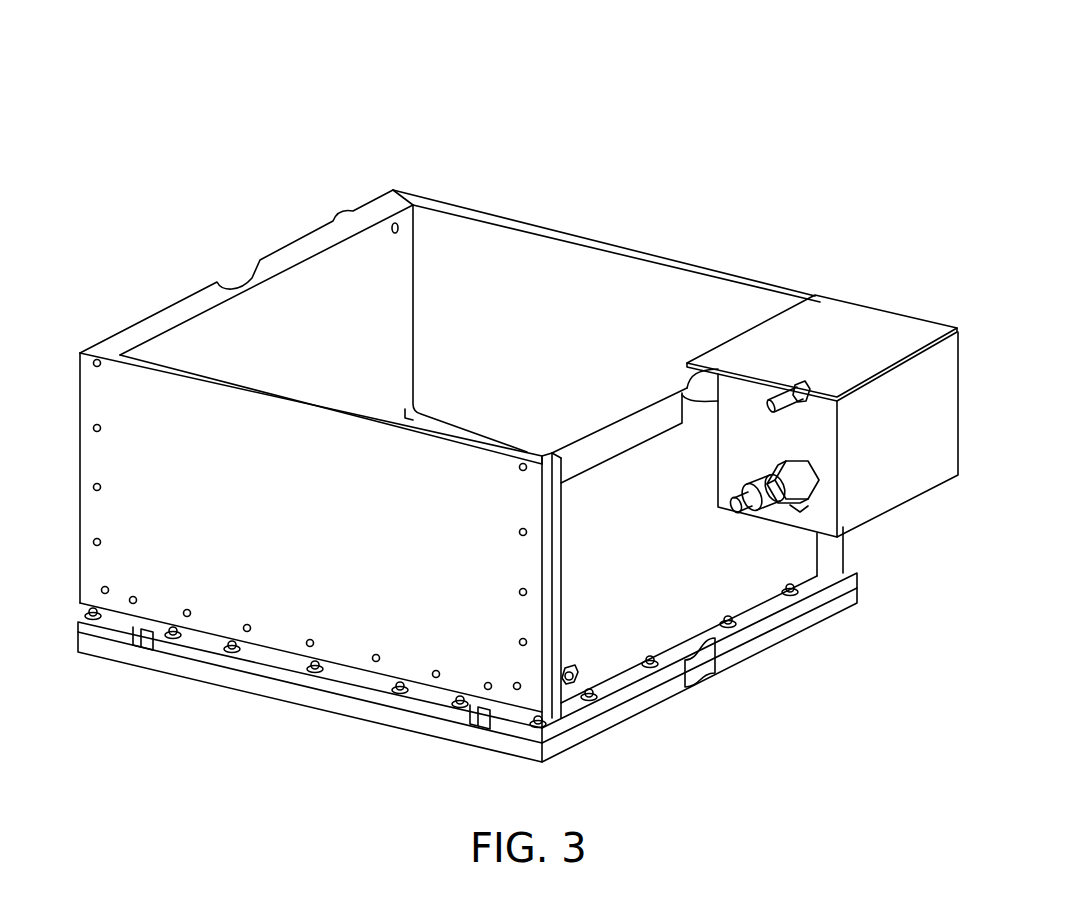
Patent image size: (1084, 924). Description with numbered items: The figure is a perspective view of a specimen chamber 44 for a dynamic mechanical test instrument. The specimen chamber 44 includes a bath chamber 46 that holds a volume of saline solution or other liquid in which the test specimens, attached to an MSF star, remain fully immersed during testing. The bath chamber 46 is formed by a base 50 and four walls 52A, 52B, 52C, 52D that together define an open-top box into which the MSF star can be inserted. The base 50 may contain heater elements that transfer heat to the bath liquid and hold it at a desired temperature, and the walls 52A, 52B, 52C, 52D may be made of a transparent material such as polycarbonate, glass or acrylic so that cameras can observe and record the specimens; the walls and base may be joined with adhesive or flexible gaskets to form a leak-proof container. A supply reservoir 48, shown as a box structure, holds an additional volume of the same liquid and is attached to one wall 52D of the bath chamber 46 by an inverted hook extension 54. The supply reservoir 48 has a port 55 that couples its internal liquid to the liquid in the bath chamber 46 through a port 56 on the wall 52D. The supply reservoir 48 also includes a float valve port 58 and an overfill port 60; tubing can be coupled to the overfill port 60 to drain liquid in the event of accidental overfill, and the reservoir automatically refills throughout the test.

The specimen chamber 44 is at (500, 403).
The bath chamber 46 is at (450, 435).
The supply reservoir 48 is at (822, 389).
The base 50 is at (78, 622).
The wall 52A is at (246, 406).
The wall 52B is at (162, 306).
The wall 52C is at (493, 213).
The wall 52D is at (612, 480).
The inverted hook extension 54 is at (820, 304).
The port 55 is at (790, 514).
The port 56 is at (579, 676).
The float valve port 58 is at (735, 505).
The overfill port 60 is at (770, 411).